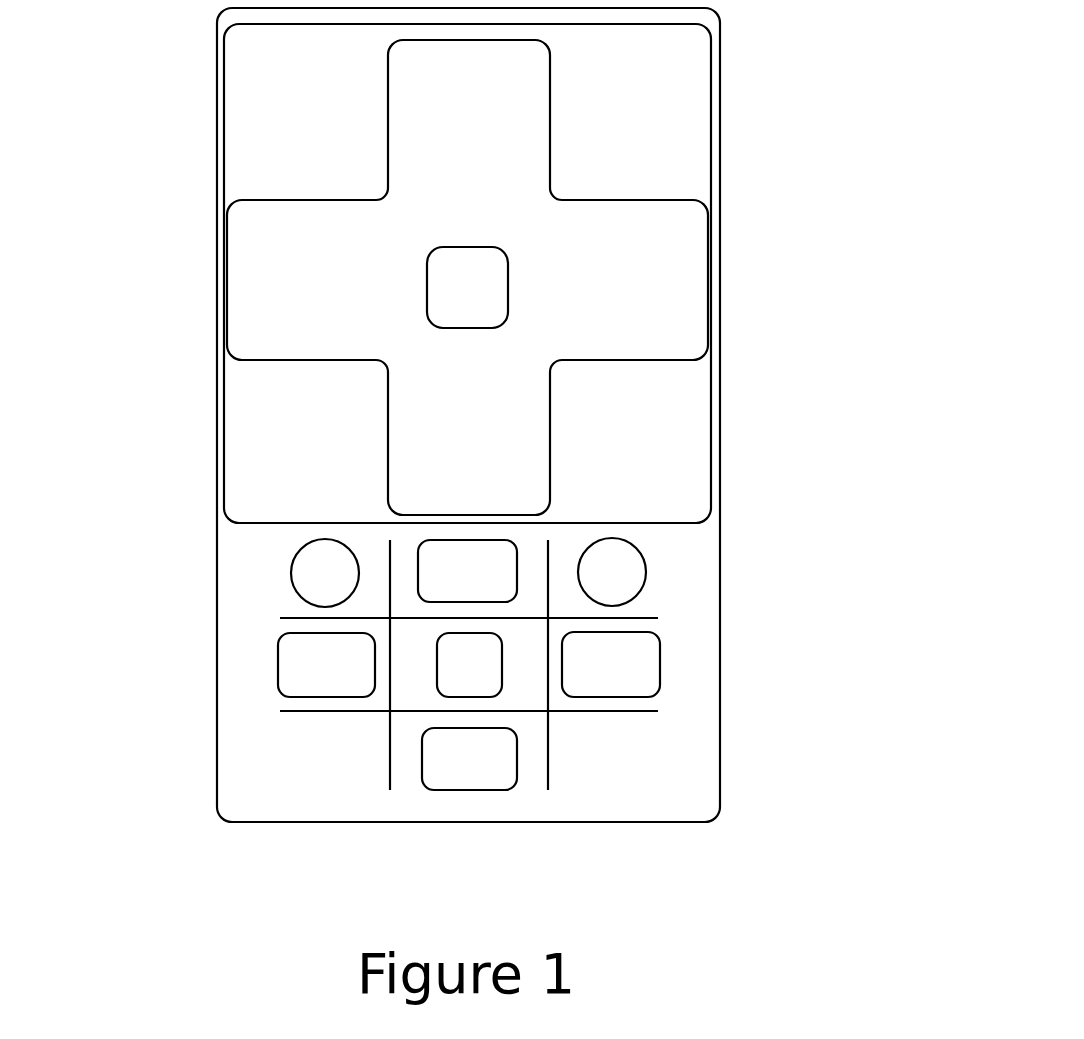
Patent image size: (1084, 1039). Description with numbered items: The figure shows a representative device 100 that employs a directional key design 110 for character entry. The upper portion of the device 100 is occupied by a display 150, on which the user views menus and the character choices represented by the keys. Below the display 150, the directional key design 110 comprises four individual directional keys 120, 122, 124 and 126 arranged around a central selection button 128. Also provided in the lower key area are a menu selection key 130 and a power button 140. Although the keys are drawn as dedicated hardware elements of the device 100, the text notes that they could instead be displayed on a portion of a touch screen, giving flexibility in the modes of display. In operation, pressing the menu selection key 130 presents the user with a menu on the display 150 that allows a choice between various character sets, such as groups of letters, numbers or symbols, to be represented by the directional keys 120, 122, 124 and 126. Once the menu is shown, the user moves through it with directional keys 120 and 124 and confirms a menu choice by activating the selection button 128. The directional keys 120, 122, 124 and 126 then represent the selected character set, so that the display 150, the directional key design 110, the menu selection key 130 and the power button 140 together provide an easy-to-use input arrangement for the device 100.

The device 100 is at (732, 69).
The display 150 is at (713, 148).
The directional key design 110 is at (680, 728).
The directional key 120 is at (517, 550).
The directional key 122 is at (662, 663).
The directional key 124 is at (422, 773).
The directional key 126 is at (278, 667).
The selection button 128 is at (437, 687).
The menu selection key 130 is at (292, 573).
The power button 140 is at (647, 572).